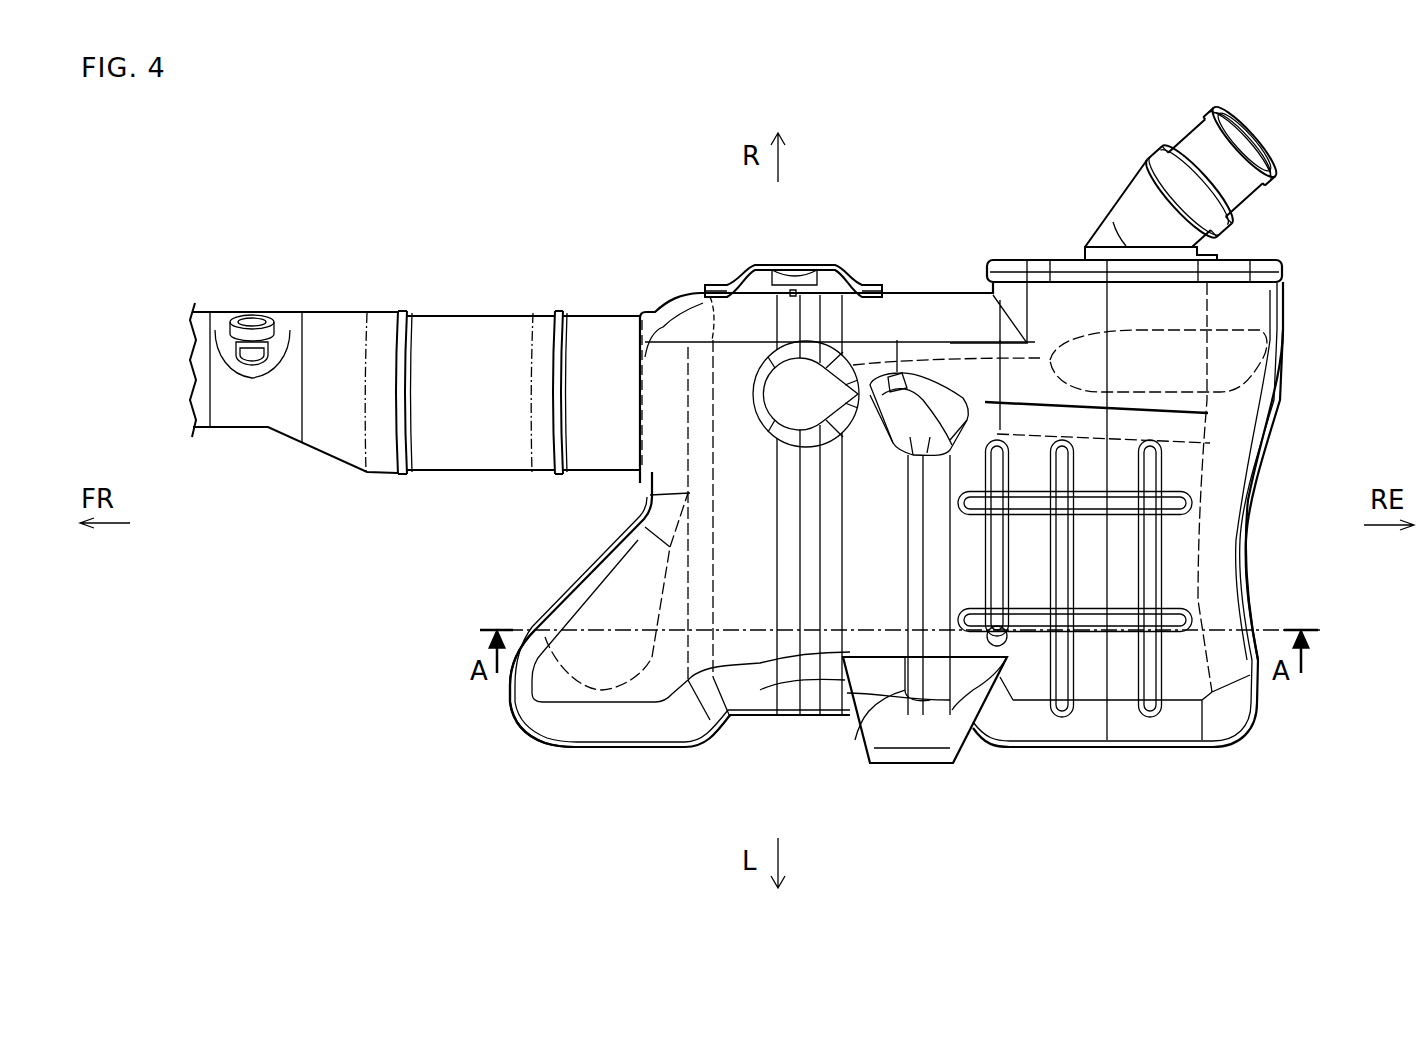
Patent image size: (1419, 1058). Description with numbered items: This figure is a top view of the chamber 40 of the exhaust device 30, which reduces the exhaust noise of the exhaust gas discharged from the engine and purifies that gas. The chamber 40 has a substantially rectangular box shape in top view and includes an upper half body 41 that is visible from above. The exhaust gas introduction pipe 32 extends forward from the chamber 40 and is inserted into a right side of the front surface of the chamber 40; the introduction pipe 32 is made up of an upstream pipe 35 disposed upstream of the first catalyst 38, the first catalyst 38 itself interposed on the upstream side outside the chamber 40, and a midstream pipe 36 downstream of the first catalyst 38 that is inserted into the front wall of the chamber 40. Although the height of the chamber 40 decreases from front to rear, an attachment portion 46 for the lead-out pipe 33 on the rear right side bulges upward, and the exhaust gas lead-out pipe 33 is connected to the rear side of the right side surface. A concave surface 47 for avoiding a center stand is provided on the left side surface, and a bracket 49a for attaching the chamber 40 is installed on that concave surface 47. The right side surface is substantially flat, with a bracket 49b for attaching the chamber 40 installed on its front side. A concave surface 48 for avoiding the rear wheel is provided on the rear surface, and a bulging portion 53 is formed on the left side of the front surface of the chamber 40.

The exhaust device 30 is at (636, 108).
The introduction pipe 32 is at (497, 278).
The lead-out pipe 33 is at (1182, 148).
The upstream pipe 35 is at (330, 445).
The midstream pipe 36 is at (595, 460).
The first catalyst 38 is at (477, 460).
The chamber 40 is at (1310, 297).
The upper half body 41 is at (936, 300).
The attachment portion 46 is at (1240, 292).
The concave surface 47 is at (797, 710).
The concave surface 48 is at (1251, 487).
The bracket 49a is at (912, 765).
The bracket 49b is at (826, 262).
The bulging portion 53 is at (530, 710).